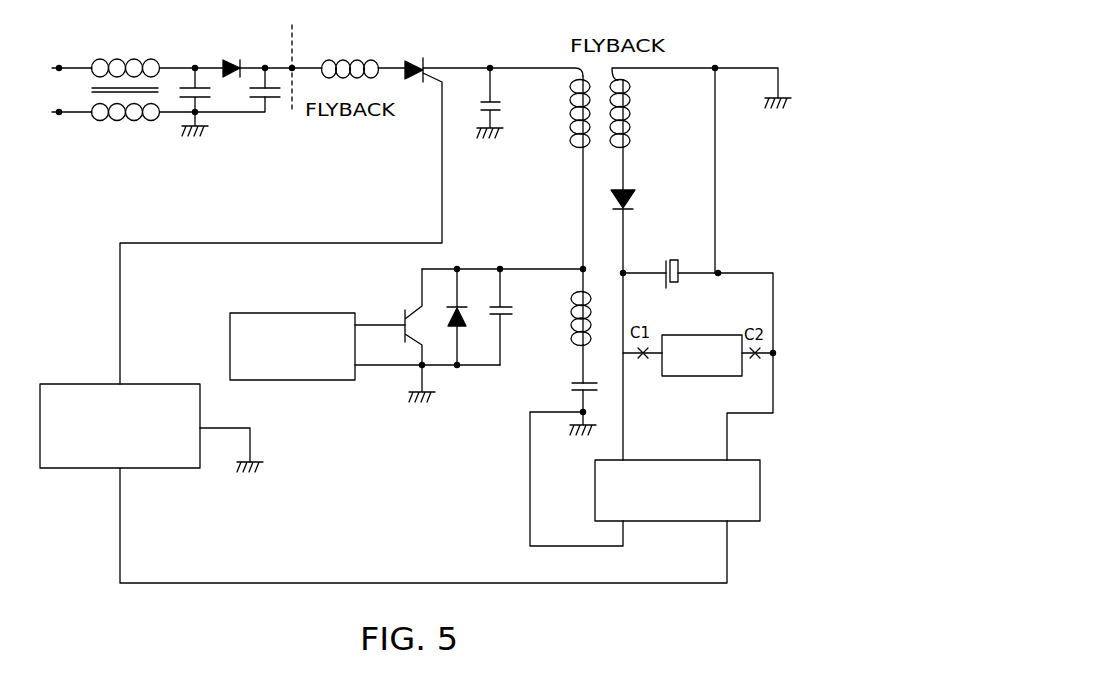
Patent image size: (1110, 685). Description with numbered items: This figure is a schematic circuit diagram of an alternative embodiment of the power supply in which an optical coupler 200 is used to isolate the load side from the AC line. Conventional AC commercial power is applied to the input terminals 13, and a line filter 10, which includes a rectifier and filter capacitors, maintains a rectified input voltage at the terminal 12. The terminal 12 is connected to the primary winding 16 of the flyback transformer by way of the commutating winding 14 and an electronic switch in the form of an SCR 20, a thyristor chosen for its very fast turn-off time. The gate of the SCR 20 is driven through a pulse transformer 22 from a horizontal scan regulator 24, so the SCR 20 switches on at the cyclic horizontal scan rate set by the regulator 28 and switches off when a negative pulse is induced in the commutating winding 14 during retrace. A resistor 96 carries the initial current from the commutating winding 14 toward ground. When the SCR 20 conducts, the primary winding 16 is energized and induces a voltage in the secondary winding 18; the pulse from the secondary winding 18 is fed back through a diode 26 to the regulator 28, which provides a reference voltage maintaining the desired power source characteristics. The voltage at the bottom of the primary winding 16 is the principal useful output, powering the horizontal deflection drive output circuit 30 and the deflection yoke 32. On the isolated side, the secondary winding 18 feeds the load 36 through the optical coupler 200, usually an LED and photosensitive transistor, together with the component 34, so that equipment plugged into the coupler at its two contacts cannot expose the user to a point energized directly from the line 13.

The line filter 10 is at (301, 185).
The terminal 12 is at (292, 66).
The input terminals 13 is at (59, 68).
The commutating winding 14 is at (337, 64).
The primary winding 16 is at (572, 116).
The secondary winding 18 is at (631, 119).
The SCR 20 is at (409, 62).
The pulse transformer 22 is at (110, 459).
The horizontal scan regulator 24 is at (110, 459).
The diode 26 is at (629, 189).
The regulator 28 is at (98, 473).
The horizontal deflection drive output circuit 30 is at (290, 313).
The deflection yoke 32 is at (571, 328).
The crystal / coupling element 34 is at (680, 282).
The load 36 is at (697, 377).
The resistor 96 is at (480, 108).
The optical coupler 200 is at (760, 480).